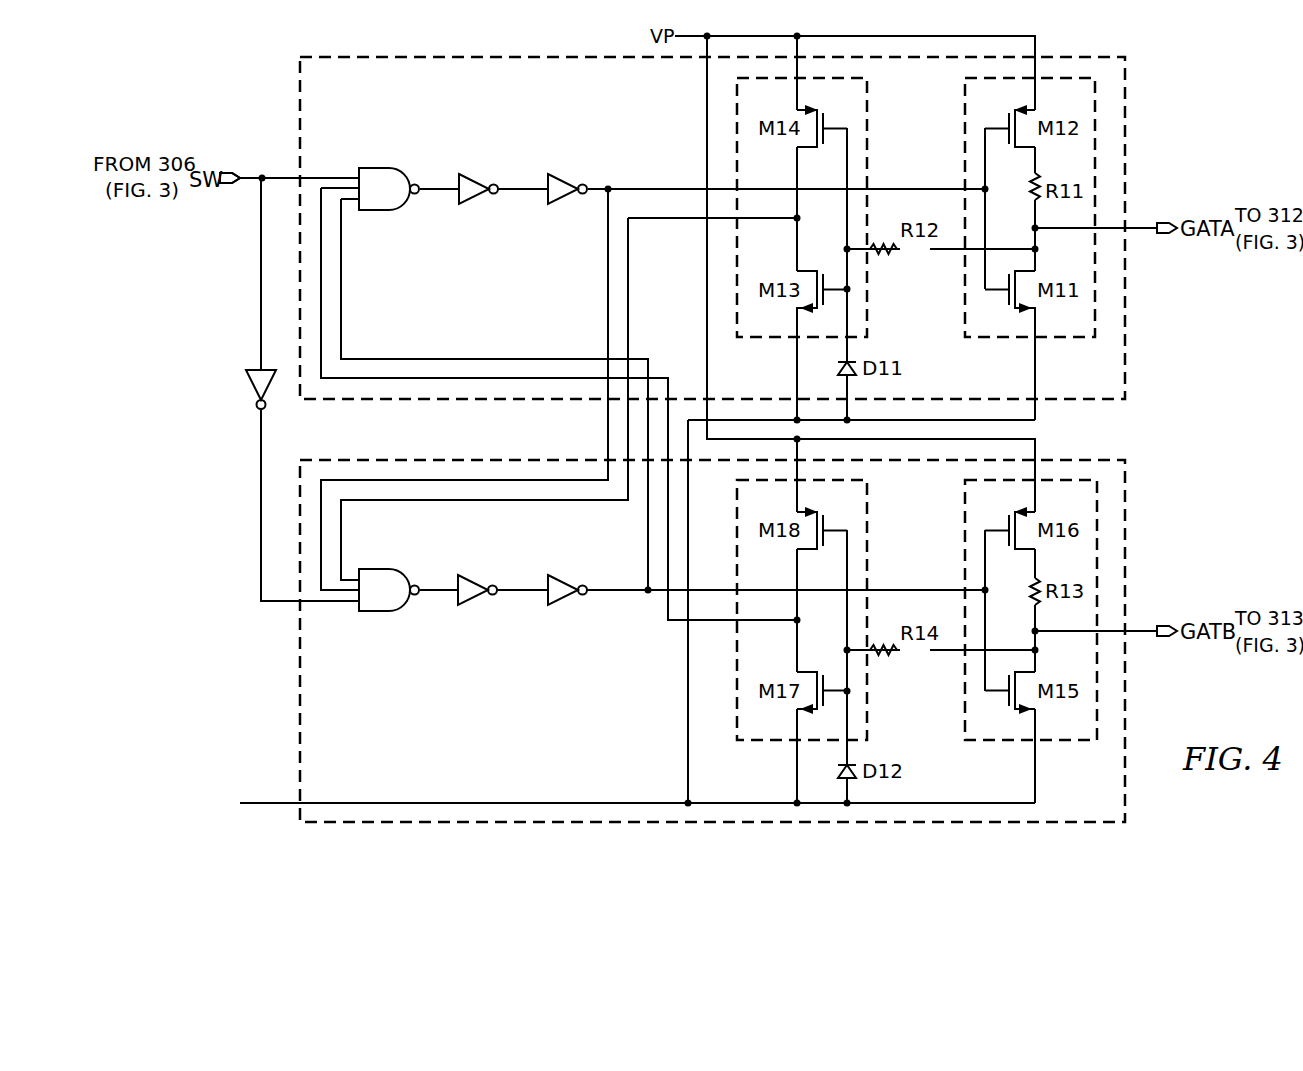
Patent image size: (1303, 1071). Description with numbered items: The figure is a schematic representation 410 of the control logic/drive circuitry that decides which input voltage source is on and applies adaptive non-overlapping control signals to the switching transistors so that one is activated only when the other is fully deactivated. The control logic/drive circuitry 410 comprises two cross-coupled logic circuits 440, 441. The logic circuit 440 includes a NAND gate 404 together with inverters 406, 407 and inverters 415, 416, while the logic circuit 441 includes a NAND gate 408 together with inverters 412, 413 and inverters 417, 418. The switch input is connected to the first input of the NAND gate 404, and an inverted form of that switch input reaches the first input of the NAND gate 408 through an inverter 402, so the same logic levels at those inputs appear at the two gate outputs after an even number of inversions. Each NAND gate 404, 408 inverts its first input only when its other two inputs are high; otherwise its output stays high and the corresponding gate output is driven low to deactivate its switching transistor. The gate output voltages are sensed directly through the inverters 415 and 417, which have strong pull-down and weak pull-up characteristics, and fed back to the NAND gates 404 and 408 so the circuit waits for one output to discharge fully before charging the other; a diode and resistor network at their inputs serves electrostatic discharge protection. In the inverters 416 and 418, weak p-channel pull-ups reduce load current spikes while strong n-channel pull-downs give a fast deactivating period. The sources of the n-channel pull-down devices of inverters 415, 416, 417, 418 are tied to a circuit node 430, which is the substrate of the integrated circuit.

The inverter 402 is at (252, 384).
The NAND gate 404 is at (395, 167).
The inverter 406 is at (477, 177).
The inverter 407 is at (567, 177).
The NAND gate 408 is at (388, 614).
The control logic/drive circuitry 410 is at (211, 98).
The inverter 412 is at (478, 601).
The inverter 413 is at (568, 601).
The inverter 415 is at (870, 109).
The inverter 416 is at (962, 312).
The inverter 417 is at (870, 507).
The inverter 418 is at (1071, 744).
The circuit node 430 is at (270, 804).
The logic circuit 440 is at (1129, 118).
The logic circuit 441 is at (1129, 519).